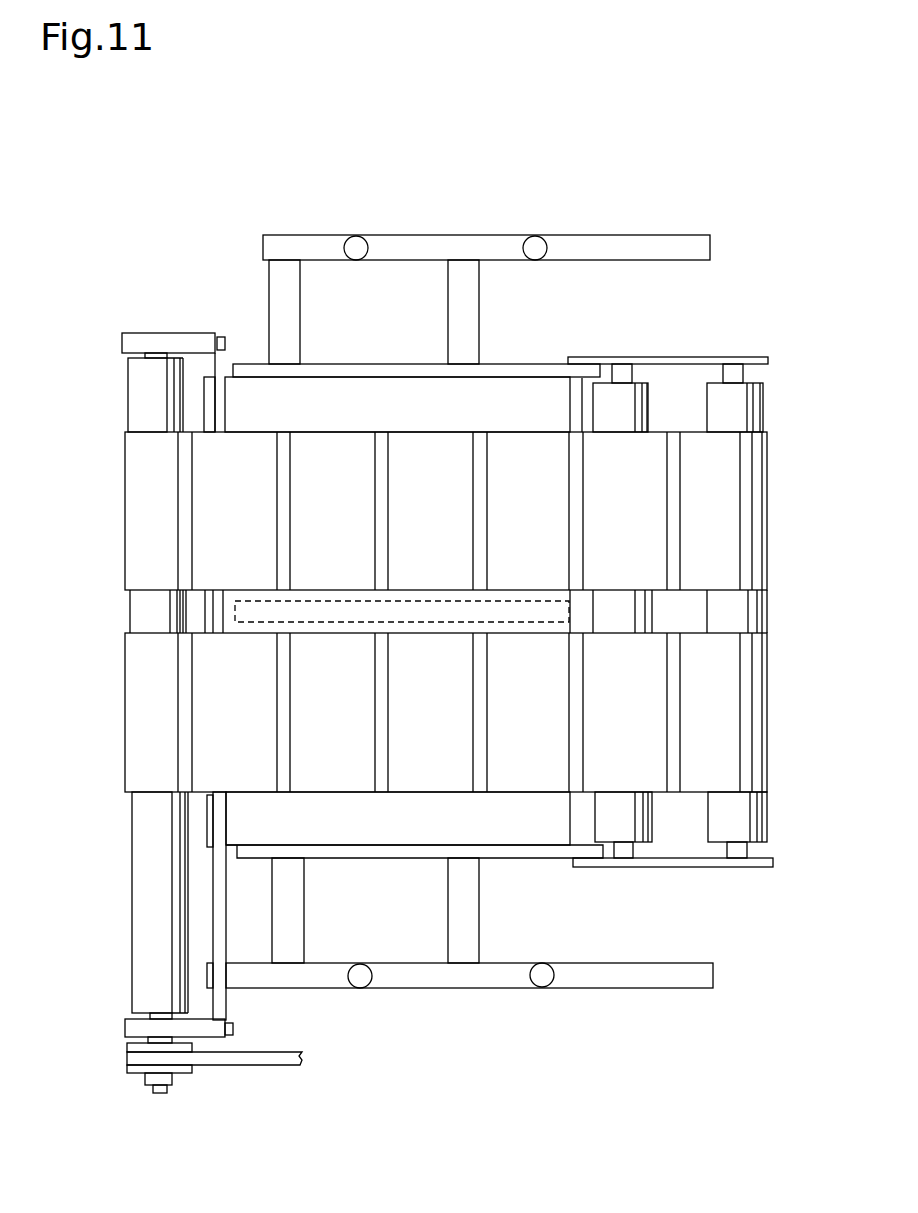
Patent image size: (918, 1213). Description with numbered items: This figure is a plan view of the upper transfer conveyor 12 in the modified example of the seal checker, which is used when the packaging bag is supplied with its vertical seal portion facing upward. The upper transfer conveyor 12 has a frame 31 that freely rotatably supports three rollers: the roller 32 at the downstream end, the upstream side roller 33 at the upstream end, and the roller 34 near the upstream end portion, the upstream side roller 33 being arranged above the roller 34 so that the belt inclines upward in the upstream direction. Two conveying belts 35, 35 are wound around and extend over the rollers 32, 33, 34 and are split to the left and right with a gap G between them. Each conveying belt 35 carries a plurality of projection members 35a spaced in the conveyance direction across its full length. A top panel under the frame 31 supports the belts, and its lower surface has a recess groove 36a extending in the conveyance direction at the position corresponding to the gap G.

The upper transfer conveyor 12 is at (765, 338).
The frame 31 is at (653, 990).
The roller 32 is at (138, 393).
The upstream side roller 33 is at (740, 407).
The roller 34 is at (623, 407).
The conveying belt 35 is at (755, 478).
The projection member 35a is at (283, 462).
The recess groove 36a is at (365, 613).